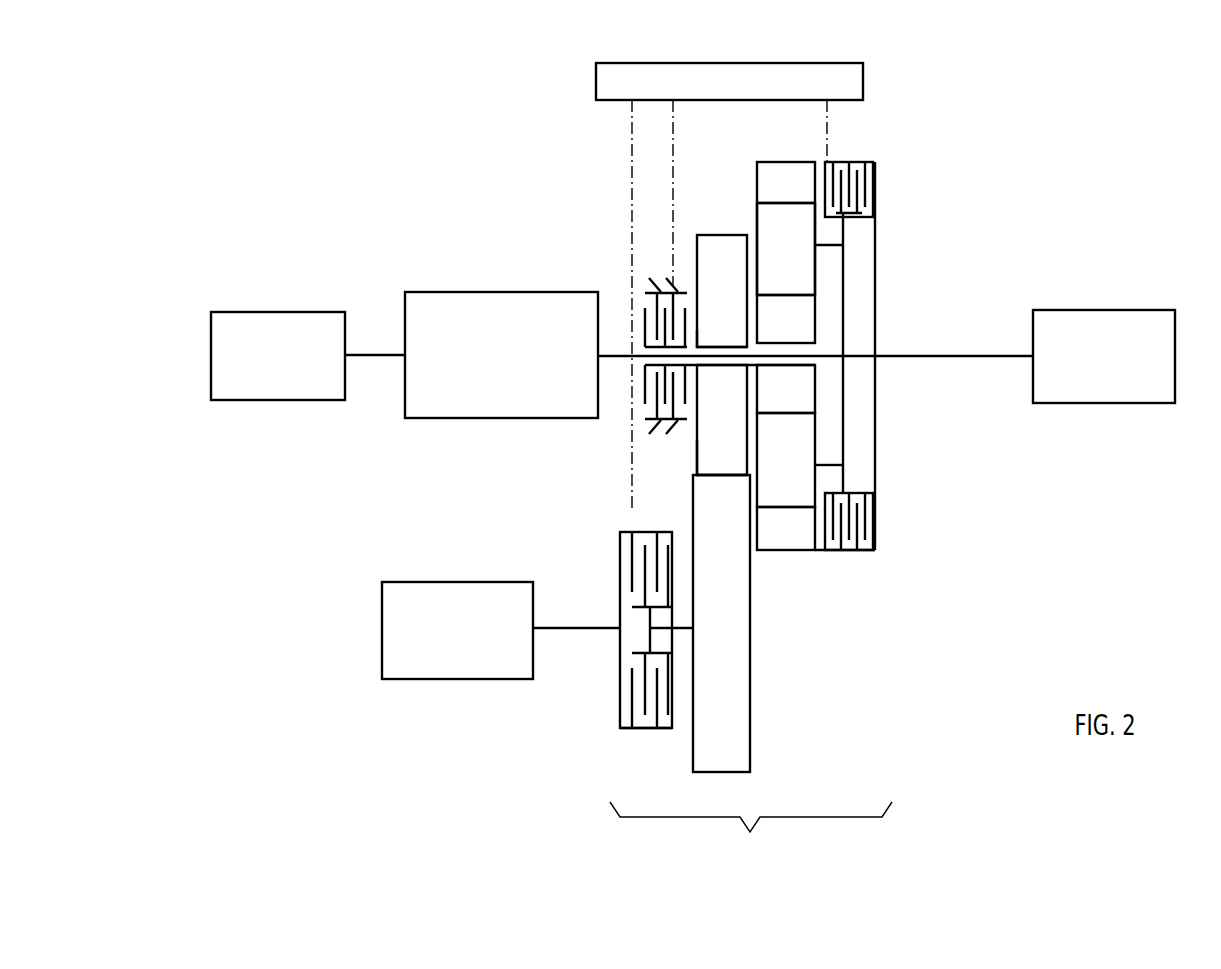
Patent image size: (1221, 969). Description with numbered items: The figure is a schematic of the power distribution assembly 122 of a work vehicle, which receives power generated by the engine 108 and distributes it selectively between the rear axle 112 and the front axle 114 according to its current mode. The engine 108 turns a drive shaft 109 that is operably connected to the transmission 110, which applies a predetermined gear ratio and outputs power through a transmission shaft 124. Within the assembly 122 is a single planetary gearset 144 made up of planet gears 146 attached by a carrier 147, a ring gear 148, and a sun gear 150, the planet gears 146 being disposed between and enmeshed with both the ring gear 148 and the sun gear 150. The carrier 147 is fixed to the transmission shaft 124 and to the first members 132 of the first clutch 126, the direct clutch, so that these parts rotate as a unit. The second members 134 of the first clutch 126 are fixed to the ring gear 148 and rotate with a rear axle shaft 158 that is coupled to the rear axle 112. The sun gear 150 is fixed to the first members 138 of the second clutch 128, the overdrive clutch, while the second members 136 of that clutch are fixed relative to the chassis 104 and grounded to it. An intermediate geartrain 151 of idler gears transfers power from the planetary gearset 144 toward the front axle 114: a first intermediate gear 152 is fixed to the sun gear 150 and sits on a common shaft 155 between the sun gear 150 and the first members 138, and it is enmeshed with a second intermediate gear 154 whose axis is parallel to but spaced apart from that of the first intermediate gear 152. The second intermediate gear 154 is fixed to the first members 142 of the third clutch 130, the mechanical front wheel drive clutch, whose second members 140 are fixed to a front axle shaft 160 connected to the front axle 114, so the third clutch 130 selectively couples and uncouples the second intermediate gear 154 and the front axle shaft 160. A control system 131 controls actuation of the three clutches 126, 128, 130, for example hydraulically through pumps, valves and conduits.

The chassis 104 is at (666, 432).
The engine 108 is at (278, 312).
The drive shaft 109 is at (378, 355).
The transmission 110 is at (502, 292).
The rear axle 112 is at (1103, 310).
The front axle 114 is at (455, 582).
The power distribution assembly 122 is at (751, 834).
The transmission shaft 124 is at (632, 352).
The first clutch 126 is at (882, 158).
The second clutch 128 is at (697, 298).
The third clutch 130 is at (612, 738).
The control system 131 is at (863, 82).
The first members 132 is at (853, 215).
The second members 134 is at (845, 162).
The second members 136 is at (660, 283).
The first members 138 is at (645, 385).
The second members 140 is at (645, 730).
The first members 142 is at (658, 652).
The planetary gearset 144 is at (786, 158).
The planet gears 146 is at (788, 268).
The carrier 147 is at (840, 443).
The ring gear 148 is at (802, 528).
The sun gear 150 is at (790, 385).
The intermediate geartrain 151 is at (732, 458).
The first intermediate gear 152 is at (720, 447).
The second intermediate gear 154 is at (740, 732).
The common shaft 155 is at (710, 347).
The rear axle shaft 158 is at (946, 356).
The front axle shaft 160 is at (588, 628).